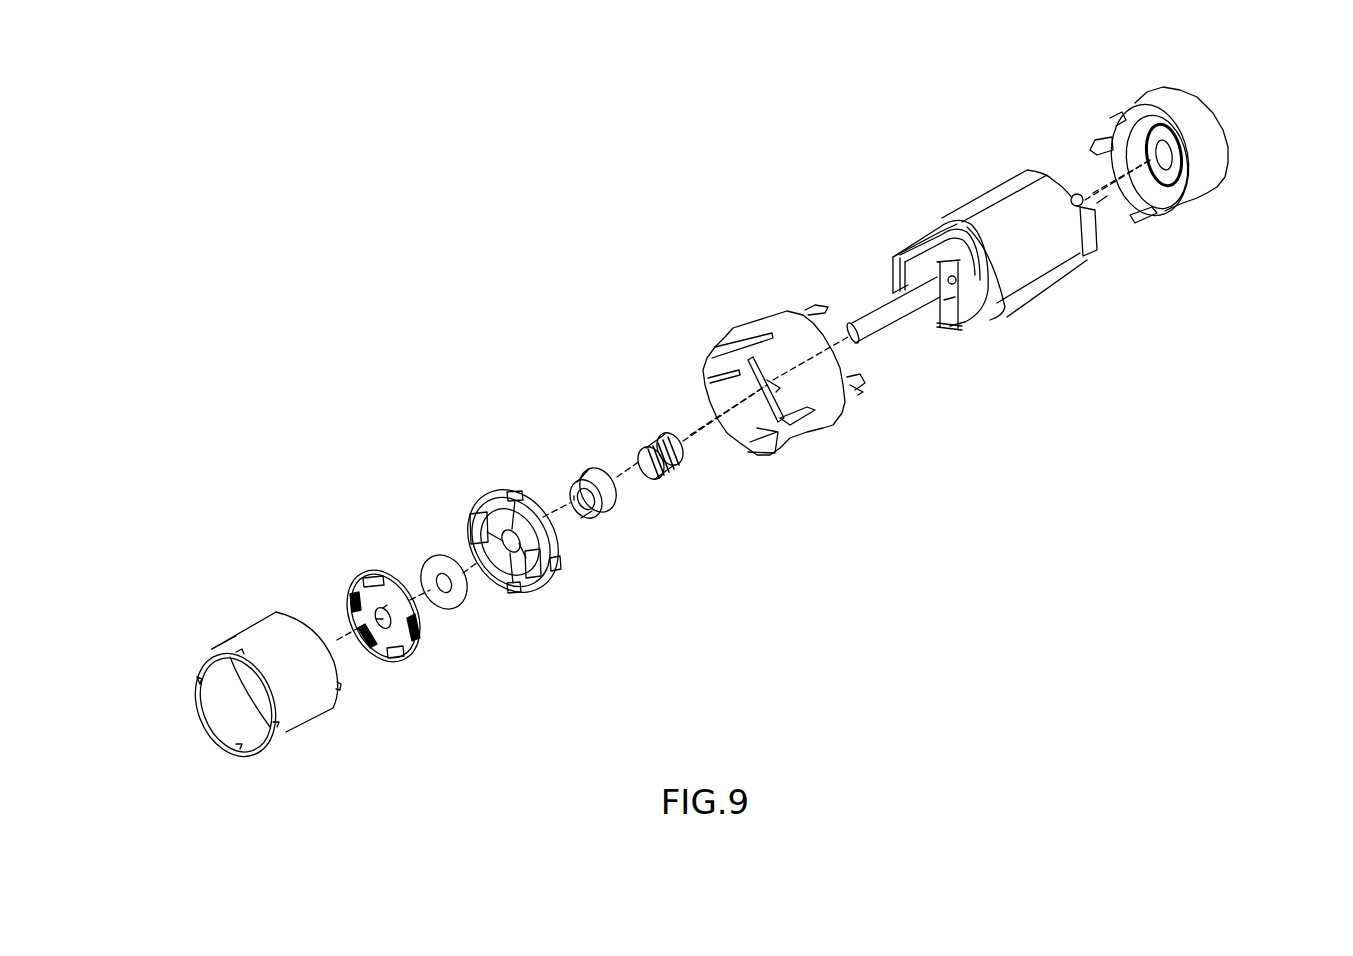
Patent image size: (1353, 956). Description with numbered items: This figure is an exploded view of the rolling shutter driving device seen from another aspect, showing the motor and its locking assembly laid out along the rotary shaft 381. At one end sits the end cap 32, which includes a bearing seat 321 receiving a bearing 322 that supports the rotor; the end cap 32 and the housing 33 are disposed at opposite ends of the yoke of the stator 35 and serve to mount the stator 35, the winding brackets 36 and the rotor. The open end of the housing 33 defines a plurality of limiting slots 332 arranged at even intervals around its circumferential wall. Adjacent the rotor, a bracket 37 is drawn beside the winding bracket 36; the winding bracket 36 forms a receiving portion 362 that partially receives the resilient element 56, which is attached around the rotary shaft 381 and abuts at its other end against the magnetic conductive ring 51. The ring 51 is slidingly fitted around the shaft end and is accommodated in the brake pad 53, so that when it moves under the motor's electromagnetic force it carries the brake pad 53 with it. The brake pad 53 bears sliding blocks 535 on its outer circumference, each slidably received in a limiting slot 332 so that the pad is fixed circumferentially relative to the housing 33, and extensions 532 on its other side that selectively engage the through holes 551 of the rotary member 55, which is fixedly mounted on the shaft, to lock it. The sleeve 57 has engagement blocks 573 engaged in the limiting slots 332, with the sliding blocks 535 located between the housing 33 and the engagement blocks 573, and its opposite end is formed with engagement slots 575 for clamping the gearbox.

The end cap 32 is at (1207, 150).
The bearing seat 321 is at (1113, 122).
The bearing 322 is at (1165, 217).
The housing 33 is at (828, 400).
The limiting slots 332 is at (798, 430).
The stator 35 is at (1048, 306).
The winding bracket 36 is at (975, 313).
The end bracket 37 is at (943, 220).
The receiving portion 362 is at (922, 237).
The rotary shaft 381 is at (894, 330).
The magnetic conductive ring 51 is at (588, 474).
The brake pad 53 is at (478, 474).
The extensions 532 is at (475, 535).
The sliding blocks 535 is at (556, 563).
The rotary member 55 is at (356, 596).
The through holes 551 is at (397, 663).
The resilient element 56 is at (658, 432).
The sleeve 57 is at (294, 735).
The engagement blocks 573 is at (292, 613).
The engagement slots 575 is at (197, 684).